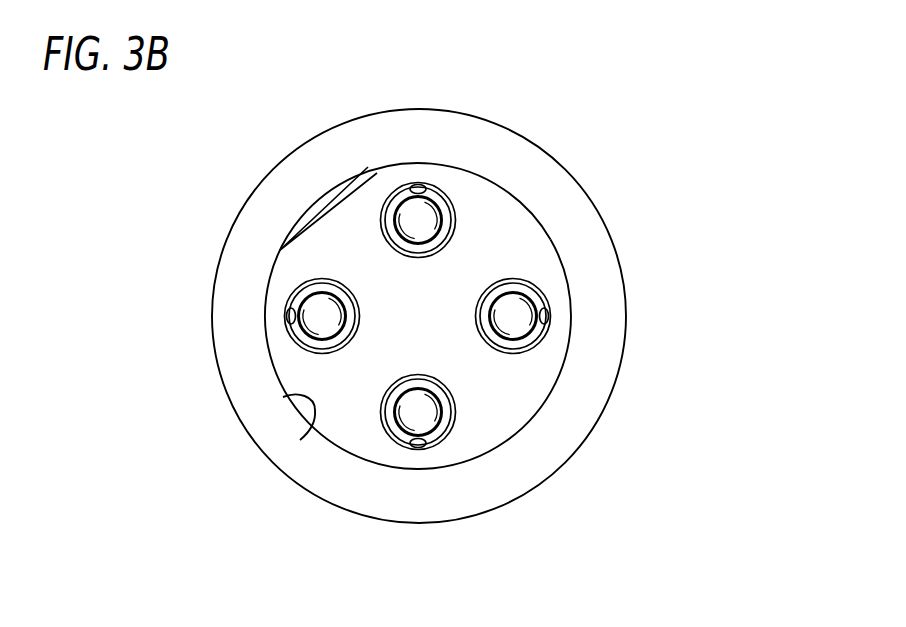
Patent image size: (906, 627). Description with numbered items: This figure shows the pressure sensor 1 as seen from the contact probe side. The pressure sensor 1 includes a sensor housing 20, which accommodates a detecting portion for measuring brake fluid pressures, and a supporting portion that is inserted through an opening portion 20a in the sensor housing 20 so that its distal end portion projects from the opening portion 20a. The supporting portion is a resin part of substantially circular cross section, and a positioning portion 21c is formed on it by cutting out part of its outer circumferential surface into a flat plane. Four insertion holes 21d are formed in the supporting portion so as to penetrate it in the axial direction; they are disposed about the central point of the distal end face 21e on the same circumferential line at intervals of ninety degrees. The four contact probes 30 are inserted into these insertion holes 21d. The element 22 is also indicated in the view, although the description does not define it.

The pressure sensor 1 is at (484, 98).
The sensor housing 20 is at (583, 168).
The opening portion 20a is at (312, 425).
The positioning portion 21c is at (284, 258).
The insertion holes 21d is at (435, 187).
The distal end face 21e is at (553, 291).
The recess 22 is at (344, 456).
The contact probes 30 is at (414, 210).